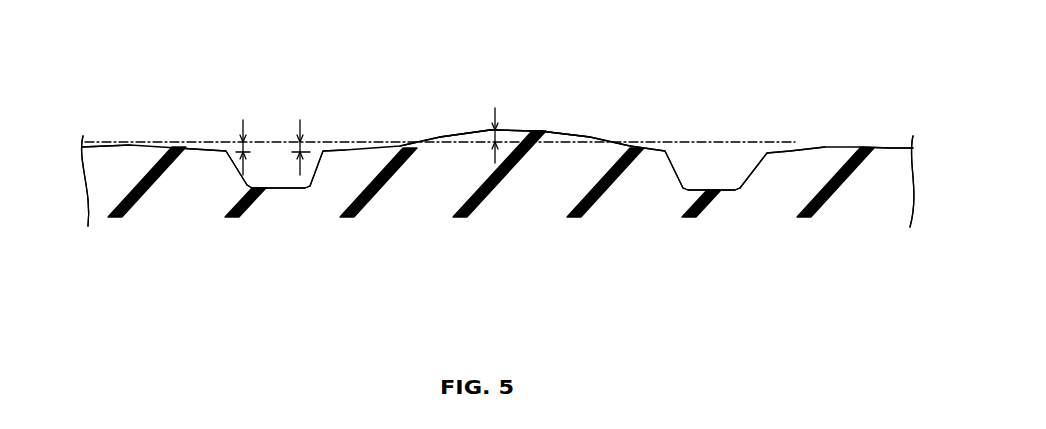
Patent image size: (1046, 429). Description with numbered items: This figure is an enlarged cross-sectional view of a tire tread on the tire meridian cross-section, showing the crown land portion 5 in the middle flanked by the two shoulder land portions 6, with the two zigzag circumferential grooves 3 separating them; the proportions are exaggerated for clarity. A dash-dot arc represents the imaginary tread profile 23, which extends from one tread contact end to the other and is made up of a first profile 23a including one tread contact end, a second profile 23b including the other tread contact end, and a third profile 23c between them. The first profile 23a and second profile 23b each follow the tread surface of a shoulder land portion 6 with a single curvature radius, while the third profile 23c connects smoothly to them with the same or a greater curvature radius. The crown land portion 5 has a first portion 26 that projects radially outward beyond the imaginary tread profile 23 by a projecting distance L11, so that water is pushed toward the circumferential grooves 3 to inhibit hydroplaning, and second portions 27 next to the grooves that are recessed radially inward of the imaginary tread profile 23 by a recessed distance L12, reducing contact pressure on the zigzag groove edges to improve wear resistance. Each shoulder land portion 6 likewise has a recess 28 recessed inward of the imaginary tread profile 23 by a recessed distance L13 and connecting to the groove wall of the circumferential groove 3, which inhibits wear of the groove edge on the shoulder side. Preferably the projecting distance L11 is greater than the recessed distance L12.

The circumferential groove 3 is at (280, 187).
The crown land portion 5 is at (560, 131).
The shoulder land portion 6 is at (127, 143).
The imaginary tread profile 23 is at (172, 122).
The first profile 23a is at (108, 146).
The second profile 23b is at (890, 148).
The third profile 23c is at (700, 142).
The first portion 26 is at (474, 130).
The second portion 27 is at (335, 147).
The recess 28 is at (202, 146).
The projecting distance L11 is at (500, 133).
The recessed distance L12 is at (299, 142).
The recessed distance L13 is at (244, 142).